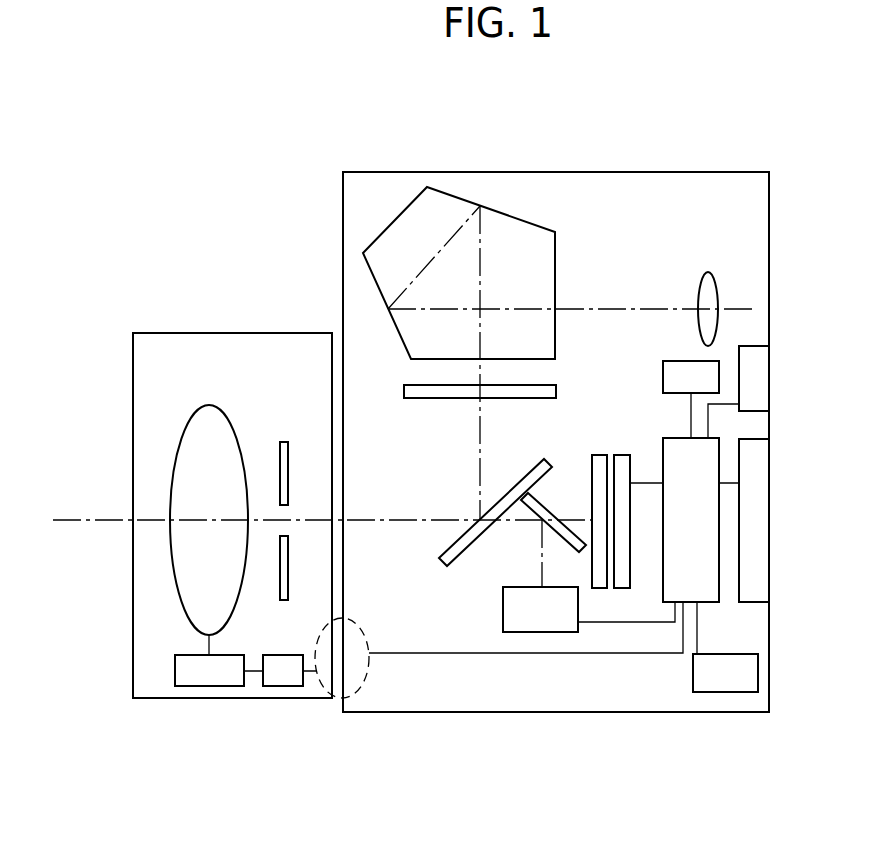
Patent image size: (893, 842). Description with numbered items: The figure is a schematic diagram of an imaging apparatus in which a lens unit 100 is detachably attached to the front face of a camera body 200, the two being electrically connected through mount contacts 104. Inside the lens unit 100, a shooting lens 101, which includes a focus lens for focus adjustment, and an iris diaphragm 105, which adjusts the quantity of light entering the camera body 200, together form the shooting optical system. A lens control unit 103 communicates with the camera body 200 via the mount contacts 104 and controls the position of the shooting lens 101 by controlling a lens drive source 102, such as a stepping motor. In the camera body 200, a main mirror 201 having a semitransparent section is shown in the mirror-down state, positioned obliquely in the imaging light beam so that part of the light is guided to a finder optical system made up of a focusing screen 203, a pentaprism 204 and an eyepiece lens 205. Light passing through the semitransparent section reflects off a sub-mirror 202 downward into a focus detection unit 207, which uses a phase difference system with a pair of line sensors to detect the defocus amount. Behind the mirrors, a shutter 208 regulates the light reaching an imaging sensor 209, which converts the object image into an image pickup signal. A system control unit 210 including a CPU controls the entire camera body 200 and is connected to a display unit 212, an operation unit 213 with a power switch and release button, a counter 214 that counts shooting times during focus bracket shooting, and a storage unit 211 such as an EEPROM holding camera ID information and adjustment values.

The lens unit 100 is at (170, 333).
The shooting lens 101 is at (210, 405).
The lens drive source 102 is at (208, 686).
The lens control unit 103 is at (285, 686).
The mount contacts 104 is at (353, 690).
The iris diaphragm 105 is at (283, 442).
The camera body 200 is at (636, 172).
The main mirror 201 is at (447, 557).
The sub-mirror 202 is at (533, 507).
The focusing screen 203 is at (425, 392).
The pentaprism 204 is at (558, 208).
The eyepiece lens 205 is at (708, 272).
The focus detection unit 207 is at (503, 612).
The shutter 208 is at (598, 460).
The imaging sensor 209 is at (622, 460).
The system control unit 210 is at (707, 601).
The storage unit 211 is at (758, 673).
The display unit 212 is at (762, 522).
The operation unit 213 is at (760, 380).
The counter 214 is at (678, 367).